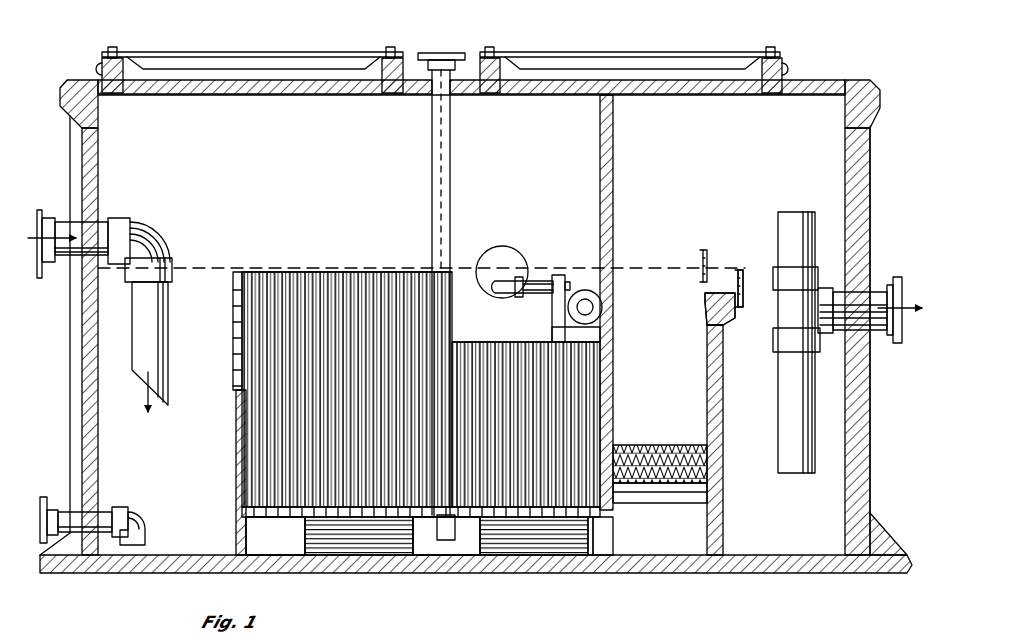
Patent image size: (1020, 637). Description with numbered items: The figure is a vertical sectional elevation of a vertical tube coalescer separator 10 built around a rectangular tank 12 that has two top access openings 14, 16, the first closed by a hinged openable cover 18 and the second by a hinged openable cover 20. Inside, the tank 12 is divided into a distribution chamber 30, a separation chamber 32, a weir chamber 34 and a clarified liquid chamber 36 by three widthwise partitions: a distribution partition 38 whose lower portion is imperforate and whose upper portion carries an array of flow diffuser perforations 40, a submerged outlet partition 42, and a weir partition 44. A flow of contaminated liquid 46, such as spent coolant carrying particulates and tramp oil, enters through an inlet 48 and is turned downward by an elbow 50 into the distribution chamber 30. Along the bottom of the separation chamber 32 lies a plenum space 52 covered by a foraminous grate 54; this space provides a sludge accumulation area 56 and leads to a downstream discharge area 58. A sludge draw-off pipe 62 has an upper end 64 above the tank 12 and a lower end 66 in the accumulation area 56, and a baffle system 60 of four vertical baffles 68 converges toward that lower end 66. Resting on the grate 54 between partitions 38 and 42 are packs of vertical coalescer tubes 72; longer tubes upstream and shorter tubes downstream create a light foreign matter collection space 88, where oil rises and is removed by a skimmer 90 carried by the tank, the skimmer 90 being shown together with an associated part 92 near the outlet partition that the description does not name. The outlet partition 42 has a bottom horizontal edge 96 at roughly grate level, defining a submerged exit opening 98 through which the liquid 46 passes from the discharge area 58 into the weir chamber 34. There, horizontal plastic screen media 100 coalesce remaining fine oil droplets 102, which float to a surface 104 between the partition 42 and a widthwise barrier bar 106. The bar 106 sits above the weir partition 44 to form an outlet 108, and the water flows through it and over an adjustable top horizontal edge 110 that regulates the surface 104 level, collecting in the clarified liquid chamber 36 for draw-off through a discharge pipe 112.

The vertical tube coalescer separator 10 is at (185, 50).
The rectangular tank 12 is at (70, 82).
The top access opening 14 is at (388, 70).
The top access opening 16 is at (770, 65).
The hinged openable cover 18 is at (344, 50).
The hinged openable cover 20 is at (586, 52).
The distribution chamber 30 is at (176, 448).
The separation chamber 32 is at (328, 295).
The weir chamber 34 is at (676, 368).
The clarified liquid chamber 36 is at (768, 424).
The distribution partition 38 is at (237, 465).
The flow diffuser perforations 40 is at (233, 286).
The submerged outlet partition 42 is at (600, 180).
The weir partition 44 is at (707, 393).
The flow of contaminated liquid 46 is at (63, 224).
The inlet 48 is at (42, 265).
The elbow 50 is at (152, 240).
The plenum space 52 is at (250, 532).
The foraminous grate 54 is at (306, 530).
The sludge accumulation area 56 is at (468, 540).
The downstream discharge area 58 is at (628, 540).
The baffle system 60 is at (592, 540).
The sludge draw-off pipe 62 is at (452, 155).
The upper end 64 is at (437, 50).
The lower end 66 is at (447, 540).
The vertical baffles 68 is at (352, 540).
The coalescer tubes 72 is at (276, 272).
The light foreign matter collection space 88 is at (468, 290).
The skimmer 90 is at (510, 252).
The float valve body 92 is at (558, 274).
The bottom horizontal edge 96 is at (614, 512).
The submerged exit opening 98 is at (606, 528).
The plastic screen media 100 is at (712, 480).
The oil droplets 102 is at (628, 288).
The surface 104 is at (666, 290).
The barrier bar 106 is at (713, 245).
The outlet 108 is at (745, 300).
The adjustable top horizontal edge 110 is at (744, 300).
The discharge pipe 112 is at (868, 296).